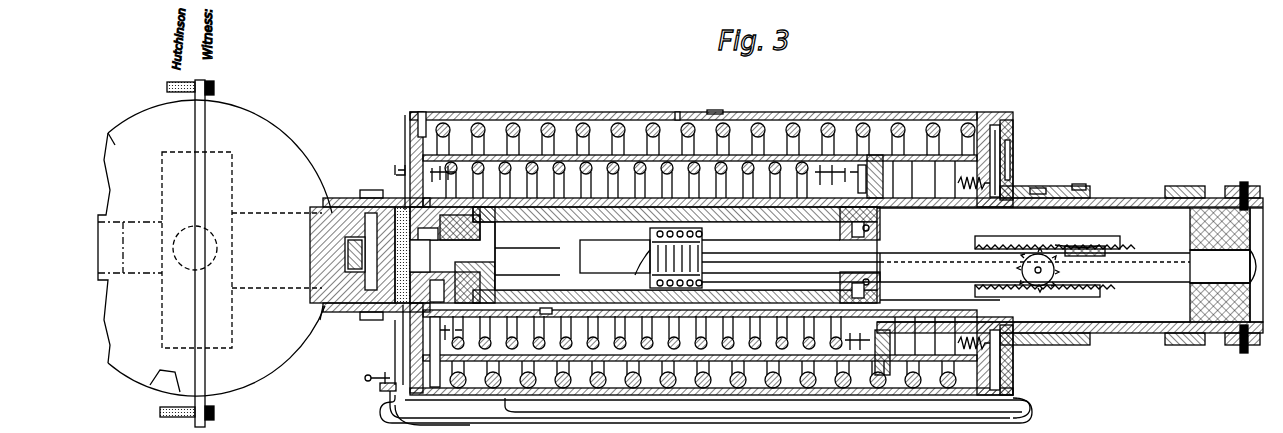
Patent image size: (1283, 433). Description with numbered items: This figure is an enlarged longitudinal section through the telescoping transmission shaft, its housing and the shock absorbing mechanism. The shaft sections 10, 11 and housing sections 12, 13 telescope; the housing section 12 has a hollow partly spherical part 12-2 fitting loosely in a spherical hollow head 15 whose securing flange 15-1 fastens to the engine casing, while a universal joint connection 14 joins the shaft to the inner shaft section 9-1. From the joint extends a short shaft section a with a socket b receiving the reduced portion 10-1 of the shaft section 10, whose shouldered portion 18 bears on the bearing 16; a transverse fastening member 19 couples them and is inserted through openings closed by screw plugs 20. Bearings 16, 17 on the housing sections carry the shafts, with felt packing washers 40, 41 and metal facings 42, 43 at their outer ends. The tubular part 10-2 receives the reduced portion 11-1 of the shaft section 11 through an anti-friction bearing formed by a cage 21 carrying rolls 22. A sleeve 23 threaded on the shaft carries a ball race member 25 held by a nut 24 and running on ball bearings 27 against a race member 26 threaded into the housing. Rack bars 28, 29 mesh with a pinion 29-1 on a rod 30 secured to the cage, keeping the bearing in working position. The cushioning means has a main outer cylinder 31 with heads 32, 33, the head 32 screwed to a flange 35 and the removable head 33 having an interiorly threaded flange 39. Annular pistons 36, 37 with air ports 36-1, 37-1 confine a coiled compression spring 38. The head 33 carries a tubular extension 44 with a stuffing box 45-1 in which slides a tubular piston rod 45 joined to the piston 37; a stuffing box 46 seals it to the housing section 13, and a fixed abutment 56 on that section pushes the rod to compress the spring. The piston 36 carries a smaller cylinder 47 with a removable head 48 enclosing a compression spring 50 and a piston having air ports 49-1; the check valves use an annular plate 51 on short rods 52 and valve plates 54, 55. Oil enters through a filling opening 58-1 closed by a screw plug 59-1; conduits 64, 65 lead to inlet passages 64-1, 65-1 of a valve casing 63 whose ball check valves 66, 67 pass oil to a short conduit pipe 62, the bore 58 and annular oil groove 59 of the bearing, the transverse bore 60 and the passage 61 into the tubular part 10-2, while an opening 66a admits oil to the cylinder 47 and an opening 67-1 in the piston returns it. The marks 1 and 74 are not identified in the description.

The bolt 1 is at (653, 254).
The inner section of the transmission shaft 9-1 is at (108, 252).
The shaft section 10 is at (675, 255).
The reduced portion of shaft section 10 10-1 is at (525, 274).
The tubular part of shaft section 10 10-2 is at (800, 228).
The shaft section 11 is at (1175, 285).
The reduced portion of shaft section 11 11-1 is at (1123, 280).
The housing section 12 is at (338, 198).
The hollow partly spherical part 12-2 is at (208, 230).
The housing section 13 is at (1128, 195).
The universal joint connection 14 is at (232, 270).
The partly spherical shaped hollow head 15 is at (215, 253).
The securing flange 15-1 is at (213, 415).
The bearing 16 is at (460, 227).
The bearing 17 is at (1190, 235).
The shouldered portion of shaft section 10 18 is at (508, 256).
The transverse fastening member 19 is at (370, 251).
The removable screw plugs 20 is at (371, 190).
The retaining frame or cage 21 is at (650, 256).
The rolls 22 is at (636, 275).
The sleeve 23 is at (880, 235).
The nut 24 is at (880, 222).
The ball race member 25 is at (880, 262).
The ball race member 26 is at (880, 298).
The ball bearings 27 is at (866, 282).
The rack bar 28 is at (1030, 255).
The rack bar 29 is at (1000, 297).
The pinion 29-1 is at (1058, 270).
The rod 30 is at (940, 303).
The main outer cylinder 31 is at (835, 103).
The end wall or head 32 is at (405, 135).
The removable end or head 33 is at (1006, 150).
The flange 35 is at (388, 171).
The annular piston 36 is at (430, 112).
The air ports 36-1 is at (410, 150).
The annular piston 37 is at (1003, 125).
The air ports 37-1 is at (996, 140).
The coiled compression spring 38 is at (583, 123).
The flange 39 is at (983, 112).
The packing washer 40 is at (445, 223).
The packing washer 41 is at (1223, 266).
The metal facing or washer 42 is at (428, 233).
The metal facing or washer 43 is at (1236, 266).
The tubular extension 44 is at (1020, 186).
The tubular piston rod 45 is at (1130, 208).
The stuffing box 45-1 is at (1080, 184).
The stuffing box 46 is at (1190, 186).
The cylinder 47 is at (770, 155).
The removable end or head 48 is at (875, 155).
The air ports 49-1 is at (866, 178).
The coiled compression spring 50 is at (613, 166).
The annular plate 51 is at (422, 112).
The short rods 52 is at (455, 178).
The valve plate 54 is at (958, 183).
The valve plate 55 is at (885, 175).
The fixed abutment or shoulder 56 is at (1235, 186).
The bore 58 is at (477, 282).
The filling opening 58-1 is at (682, 103).
The annular oil groove 59 is at (488, 218).
The screw plug 59-1 is at (715, 110).
The transverse bore 60 is at (445, 271).
The longitudinally extending passage 61 is at (527, 255).
The short conduit pipe 62 is at (395, 335).
The valve casing 63 is at (368, 378).
The conduit 64 is at (445, 400).
The inlet passage 64-1 is at (421, 419).
The conduit 65 is at (770, 425).
The inlet passage 65-1 is at (392, 402).
The ball check valve 66 is at (403, 330).
The opening in housing section 12 66a is at (546, 314).
The ball check valve 67 is at (440, 355).
The opening in piston 36 67-1 is at (440, 362).
The valve body 74 is at (380, 387).
The short shaft section a is at (325, 319).
The socket b is at (346, 255).